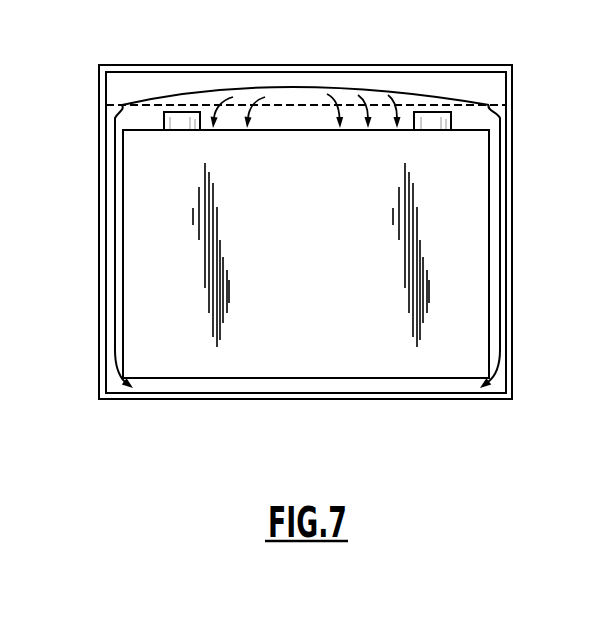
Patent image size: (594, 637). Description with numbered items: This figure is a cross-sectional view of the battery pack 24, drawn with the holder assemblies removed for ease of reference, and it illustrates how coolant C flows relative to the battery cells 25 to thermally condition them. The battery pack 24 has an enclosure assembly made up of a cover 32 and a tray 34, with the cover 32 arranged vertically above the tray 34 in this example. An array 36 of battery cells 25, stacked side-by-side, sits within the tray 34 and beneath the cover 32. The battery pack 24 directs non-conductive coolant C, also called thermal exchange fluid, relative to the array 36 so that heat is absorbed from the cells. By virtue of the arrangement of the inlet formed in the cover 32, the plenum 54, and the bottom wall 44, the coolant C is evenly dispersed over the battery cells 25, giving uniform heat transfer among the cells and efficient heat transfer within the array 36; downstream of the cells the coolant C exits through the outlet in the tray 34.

The battery pack 24 is at (384, 45).
The battery cells 25 is at (447, 302).
The cover 32 is at (91, 79).
The tray 34 is at (86, 292).
The array 36 is at (511, 263).
The bottom wall 44 is at (178, 107).
The plenum 54 is at (282, 83).
The coolant C is at (252, 94).